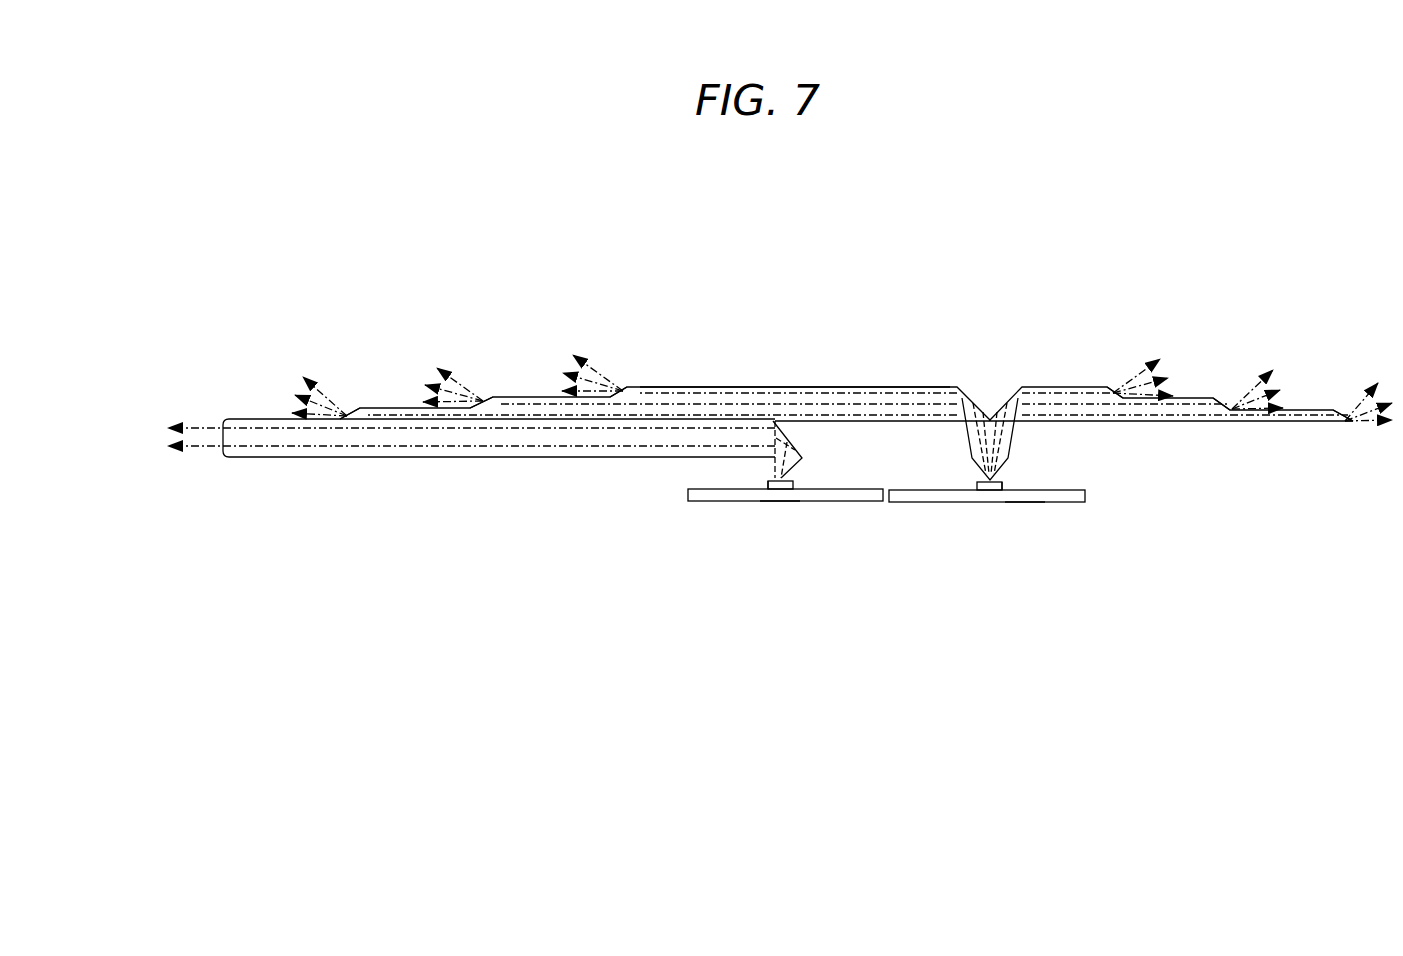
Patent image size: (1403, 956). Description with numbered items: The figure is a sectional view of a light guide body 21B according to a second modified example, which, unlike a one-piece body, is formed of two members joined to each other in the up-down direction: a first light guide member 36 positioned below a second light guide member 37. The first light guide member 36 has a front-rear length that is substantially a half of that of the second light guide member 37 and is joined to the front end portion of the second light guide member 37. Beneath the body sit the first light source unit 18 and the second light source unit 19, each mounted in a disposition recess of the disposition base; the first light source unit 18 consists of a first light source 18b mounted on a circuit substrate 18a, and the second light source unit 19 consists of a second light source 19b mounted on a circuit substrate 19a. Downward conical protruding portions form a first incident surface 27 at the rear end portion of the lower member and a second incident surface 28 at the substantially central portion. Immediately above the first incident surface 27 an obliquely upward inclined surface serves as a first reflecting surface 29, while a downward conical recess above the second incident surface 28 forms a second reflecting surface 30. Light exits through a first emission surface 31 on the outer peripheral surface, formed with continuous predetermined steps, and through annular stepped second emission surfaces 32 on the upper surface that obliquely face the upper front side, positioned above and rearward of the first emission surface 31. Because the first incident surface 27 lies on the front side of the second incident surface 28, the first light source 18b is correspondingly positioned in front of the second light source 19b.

The first light source unit 18 is at (757, 501).
The circuit substrate 18a is at (780, 501).
The first light source 18b is at (765, 484).
The second light source unit 19 is at (957, 502).
The circuit substrate 19a is at (1027, 502).
The second light source 19b is at (1005, 484).
The light guide body 21B is at (842, 355).
The first incident surface 27 is at (795, 470).
The second incident surface 28 is at (975, 484).
The first reflecting surface 29 is at (792, 442).
The second reflecting surface 30 is at (978, 412).
The first emission surface 31 is at (223, 418).
The second emission surfaces 32 is at (350, 414).
The first light guide member 36 is at (471, 425).
The second light guide member 37 is at (908, 387).